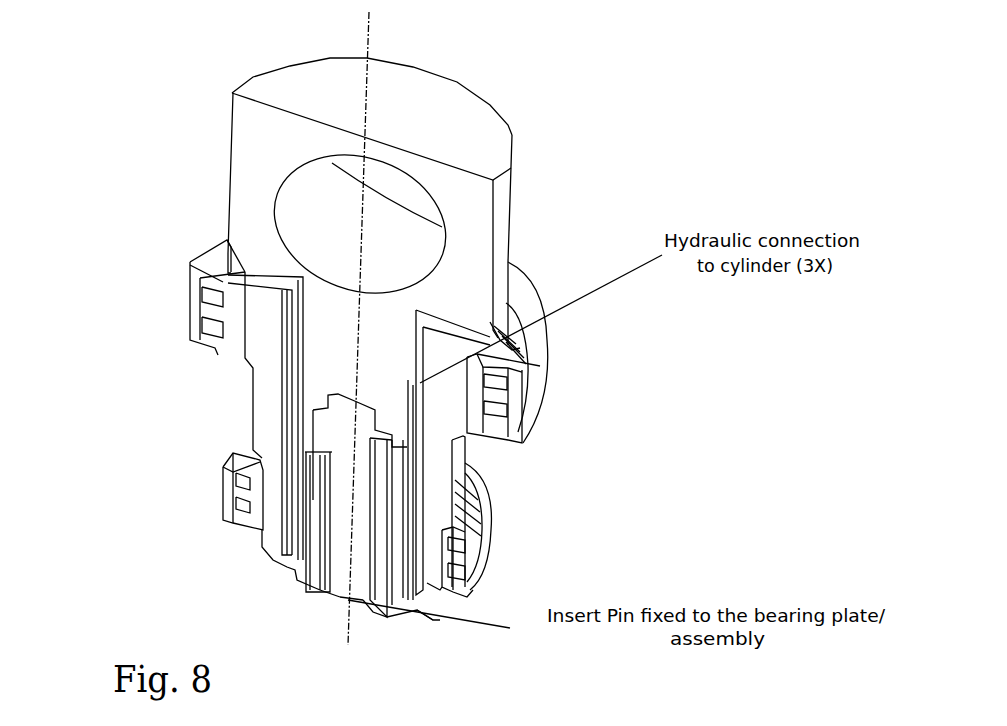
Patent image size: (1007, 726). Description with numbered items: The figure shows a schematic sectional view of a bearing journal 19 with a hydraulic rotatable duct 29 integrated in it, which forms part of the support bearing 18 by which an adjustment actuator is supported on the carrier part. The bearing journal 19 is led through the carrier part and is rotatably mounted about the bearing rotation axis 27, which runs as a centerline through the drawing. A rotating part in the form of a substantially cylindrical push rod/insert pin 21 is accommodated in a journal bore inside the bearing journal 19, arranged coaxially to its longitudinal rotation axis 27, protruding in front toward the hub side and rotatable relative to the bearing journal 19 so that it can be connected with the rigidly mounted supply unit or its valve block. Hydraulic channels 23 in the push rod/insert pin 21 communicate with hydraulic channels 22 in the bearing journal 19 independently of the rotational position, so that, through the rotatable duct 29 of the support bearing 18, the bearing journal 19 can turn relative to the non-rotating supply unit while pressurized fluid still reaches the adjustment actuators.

The support bearing 18 is at (307, 329).
The bearing journal 19 is at (494, 339).
The push rod/insert pin 21 is at (241, 606).
The hydraulic channels 22 is at (405, 332).
The hydraulic channels 23 is at (402, 482).
The bearing rotation axis 27 is at (556, 328).
The rotatable duct 29 is at (229, 467).